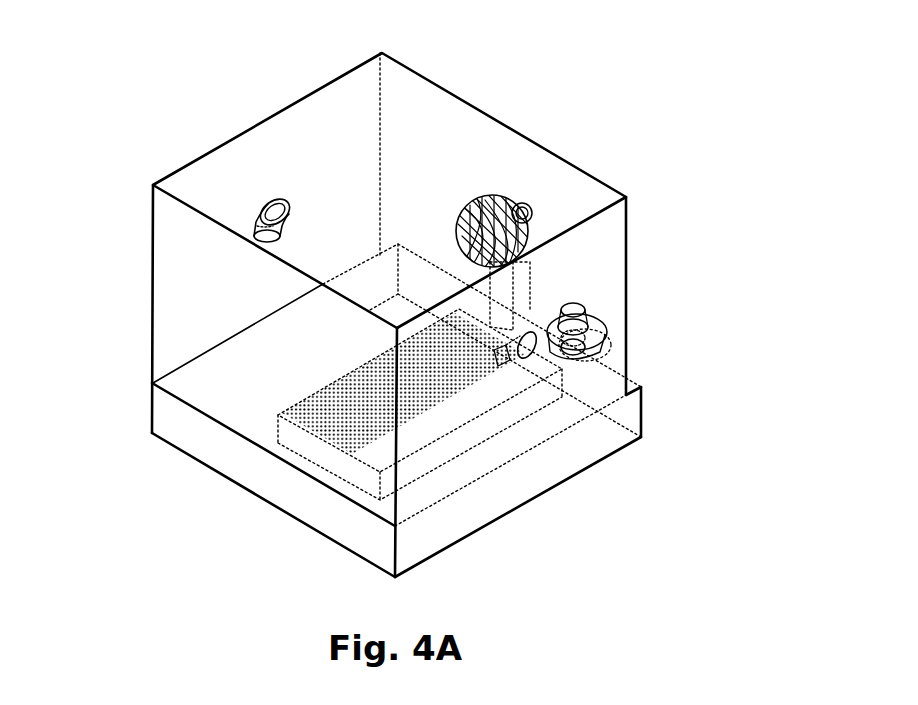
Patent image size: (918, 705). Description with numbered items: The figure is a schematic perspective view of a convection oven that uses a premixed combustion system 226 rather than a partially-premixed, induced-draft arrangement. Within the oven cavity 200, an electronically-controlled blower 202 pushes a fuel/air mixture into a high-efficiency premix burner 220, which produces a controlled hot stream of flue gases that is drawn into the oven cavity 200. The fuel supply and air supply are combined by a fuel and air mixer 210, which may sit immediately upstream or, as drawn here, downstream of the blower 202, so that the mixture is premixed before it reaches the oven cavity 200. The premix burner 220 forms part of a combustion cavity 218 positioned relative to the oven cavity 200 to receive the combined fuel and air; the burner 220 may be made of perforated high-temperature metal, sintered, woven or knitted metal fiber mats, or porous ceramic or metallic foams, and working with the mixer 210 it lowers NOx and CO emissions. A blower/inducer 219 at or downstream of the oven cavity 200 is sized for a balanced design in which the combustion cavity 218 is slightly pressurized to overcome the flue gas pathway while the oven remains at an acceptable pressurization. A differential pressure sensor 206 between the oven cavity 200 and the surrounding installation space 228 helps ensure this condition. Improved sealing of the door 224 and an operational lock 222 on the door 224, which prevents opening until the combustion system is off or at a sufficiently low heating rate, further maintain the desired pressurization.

The oven cavity 200 is at (175, 318).
The blower 202 is at (603, 337).
The differential pressure sensor 206 is at (512, 195).
The fuel and air mixer 210 is at (537, 347).
The combustion cavity 218 is at (340, 460).
The blower/inducer 219 is at (462, 207).
The premix burner 220 is at (433, 413).
The operational lock 222 is at (818, 433).
The door 224 is at (822, 527).
The premixed combustion system 226 is at (563, 290).
The installation space 228 is at (440, 236).